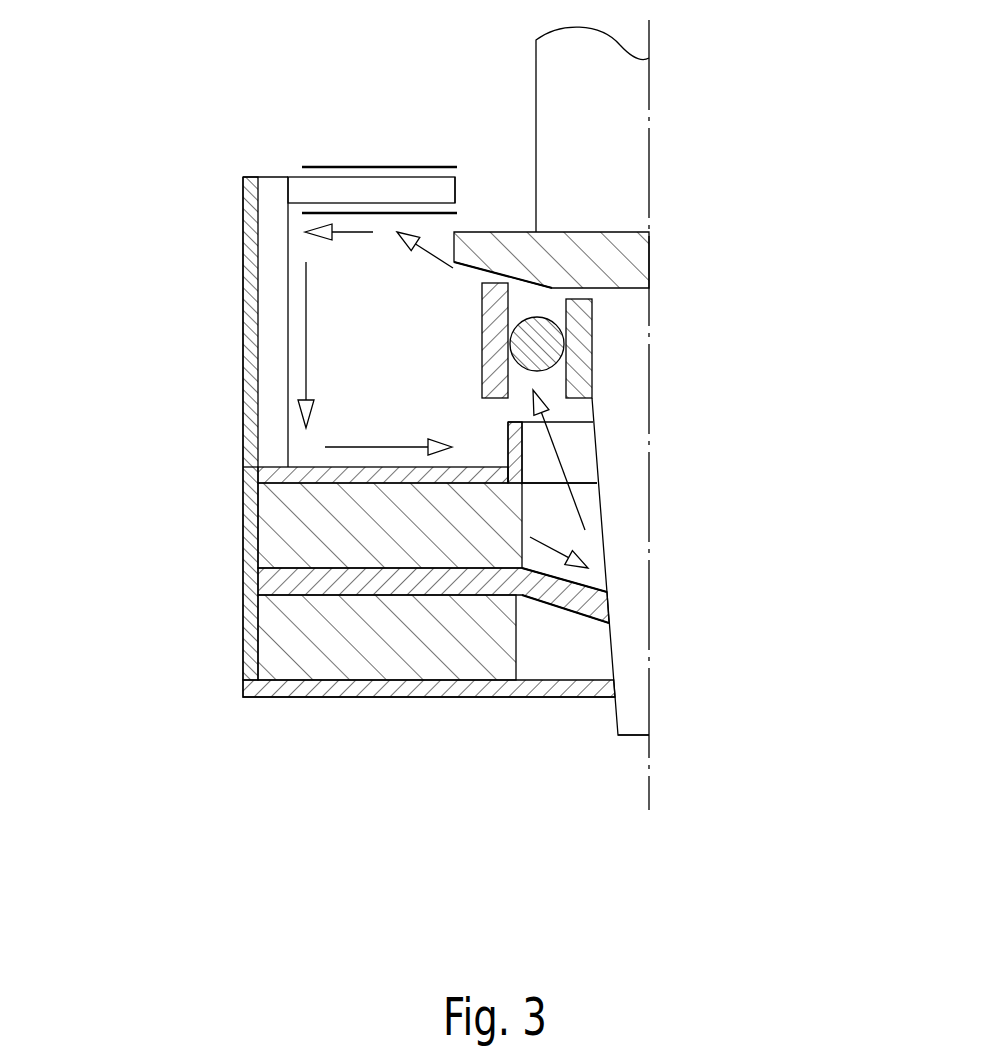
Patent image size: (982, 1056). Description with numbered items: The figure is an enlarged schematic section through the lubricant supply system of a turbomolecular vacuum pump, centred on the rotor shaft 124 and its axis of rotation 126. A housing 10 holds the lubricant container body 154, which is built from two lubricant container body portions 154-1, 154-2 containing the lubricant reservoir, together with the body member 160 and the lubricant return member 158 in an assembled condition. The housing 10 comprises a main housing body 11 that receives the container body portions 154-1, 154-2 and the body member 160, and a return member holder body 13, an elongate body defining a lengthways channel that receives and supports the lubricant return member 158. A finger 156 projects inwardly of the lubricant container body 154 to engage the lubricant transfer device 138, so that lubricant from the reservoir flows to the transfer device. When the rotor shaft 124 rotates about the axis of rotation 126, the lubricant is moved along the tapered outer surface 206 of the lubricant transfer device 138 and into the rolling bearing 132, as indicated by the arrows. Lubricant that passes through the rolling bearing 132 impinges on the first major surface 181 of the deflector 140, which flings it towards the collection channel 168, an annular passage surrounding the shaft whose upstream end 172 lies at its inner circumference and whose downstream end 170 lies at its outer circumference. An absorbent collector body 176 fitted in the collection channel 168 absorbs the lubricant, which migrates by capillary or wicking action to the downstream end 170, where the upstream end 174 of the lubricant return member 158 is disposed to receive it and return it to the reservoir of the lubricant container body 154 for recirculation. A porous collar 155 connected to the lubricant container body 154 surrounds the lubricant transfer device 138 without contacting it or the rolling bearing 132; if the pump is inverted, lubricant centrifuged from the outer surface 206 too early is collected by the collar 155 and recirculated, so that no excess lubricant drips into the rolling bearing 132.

The housing 10 is at (240, 697).
The main housing body 11 is at (365, 685).
The return member holder body 13 is at (243, 240).
The rotor shaft 124 is at (630, 105).
The axis of rotation 126 is at (649, 782).
The rolling bearing 132 is at (634, 355).
The lubricant transfer device 138 is at (618, 728).
The deflector 140 is at (640, 258).
The lubricant container body 154 is at (348, 586).
The lubricant container body portion 154-1 is at (433, 650).
The lubricant container body portion 154-2 is at (282, 493).
The collar 155 is at (520, 453).
The finger 156 is at (550, 592).
The lubricant return member 158 is at (273, 347).
The body member 160 is at (312, 587).
The collection channel 168 is at (413, 166).
The downstream end 170 is at (297, 168).
The upstream end 172 is at (460, 185).
The upstream end 174 is at (273, 202).
The absorbent collector body 176 is at (367, 177).
The first major surface 181 is at (553, 282).
The tapered outer surface 206 is at (608, 528).